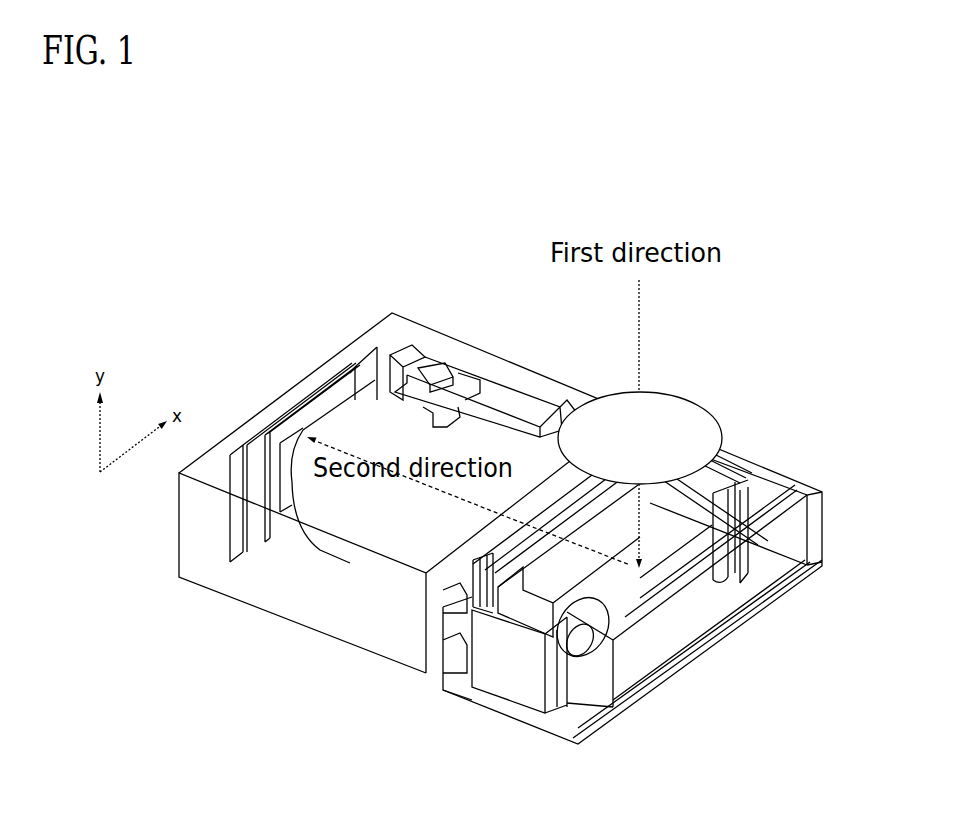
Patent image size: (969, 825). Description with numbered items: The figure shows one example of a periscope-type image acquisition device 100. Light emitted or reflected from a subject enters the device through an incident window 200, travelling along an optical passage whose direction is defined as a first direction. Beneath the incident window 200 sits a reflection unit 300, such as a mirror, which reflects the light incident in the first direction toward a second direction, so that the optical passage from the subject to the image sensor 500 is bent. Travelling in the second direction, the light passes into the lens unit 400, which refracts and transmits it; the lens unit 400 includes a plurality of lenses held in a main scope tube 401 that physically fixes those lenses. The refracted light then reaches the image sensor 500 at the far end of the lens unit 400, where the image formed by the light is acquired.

The image acquisition device 100 is at (268, 305).
The incident window 200 is at (692, 416).
The reflection unit 300 is at (707, 530).
The lens unit 400 is at (500, 528).
The main scope tube 401 is at (341, 562).
The image sensor 500 is at (252, 491).